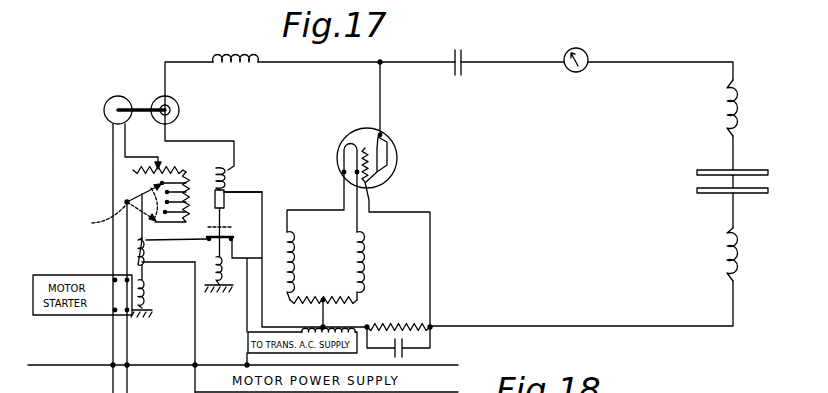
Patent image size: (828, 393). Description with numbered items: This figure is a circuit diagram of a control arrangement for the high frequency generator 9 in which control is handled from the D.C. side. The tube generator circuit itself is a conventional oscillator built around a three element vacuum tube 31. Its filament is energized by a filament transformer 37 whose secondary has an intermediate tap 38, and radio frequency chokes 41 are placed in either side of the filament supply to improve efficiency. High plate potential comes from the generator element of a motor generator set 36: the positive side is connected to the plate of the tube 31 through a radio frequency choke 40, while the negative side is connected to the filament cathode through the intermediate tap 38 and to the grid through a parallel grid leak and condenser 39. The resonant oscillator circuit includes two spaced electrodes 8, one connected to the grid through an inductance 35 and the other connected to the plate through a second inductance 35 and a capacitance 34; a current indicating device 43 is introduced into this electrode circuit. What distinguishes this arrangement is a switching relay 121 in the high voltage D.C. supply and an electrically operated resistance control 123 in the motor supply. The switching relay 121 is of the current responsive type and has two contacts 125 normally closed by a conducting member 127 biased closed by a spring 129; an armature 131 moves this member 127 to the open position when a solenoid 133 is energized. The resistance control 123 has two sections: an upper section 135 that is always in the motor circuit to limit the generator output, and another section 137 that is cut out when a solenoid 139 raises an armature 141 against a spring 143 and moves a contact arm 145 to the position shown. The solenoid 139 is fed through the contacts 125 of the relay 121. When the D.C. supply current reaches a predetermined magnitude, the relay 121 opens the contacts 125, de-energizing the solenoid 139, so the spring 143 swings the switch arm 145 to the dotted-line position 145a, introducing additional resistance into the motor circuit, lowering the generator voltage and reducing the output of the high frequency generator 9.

The spaced electrodes 8 is at (697, 191).
The high frequency generator 9 is at (607, 166).
The three element vacuum tube 31 is at (398, 158).
The capacitance 34 is at (462, 75).
The inductances 35 is at (724, 110).
The motor generator set 36 is at (141, 102).
The filament transformer 37 is at (291, 324).
The intermediate tap 38 is at (324, 309).
The parallel grid leak and condenser 39 is at (428, 347).
The radio frequency choke 40 is at (246, 70).
The radio frequency chokes 41 is at (354, 255).
The current indicating device 43 is at (573, 72).
The switching relay 121 is at (253, 217).
The resistance control 123 is at (107, 207).
The contacts 125 is at (233, 239).
The conducting member 127 is at (232, 228).
The spring 129 is at (207, 283).
The armature 131 is at (232, 192).
The solenoid 133 is at (224, 176).
The upper section of resistance control 135 is at (133, 170).
The other section of resistance control 137 is at (192, 190).
The solenoid 139 is at (138, 250).
The armature 141 is at (148, 265).
The spring 143 is at (148, 293).
The contact arm 145 is at (137, 194).
The dotted-line position of switch arm 145a is at (90, 226).